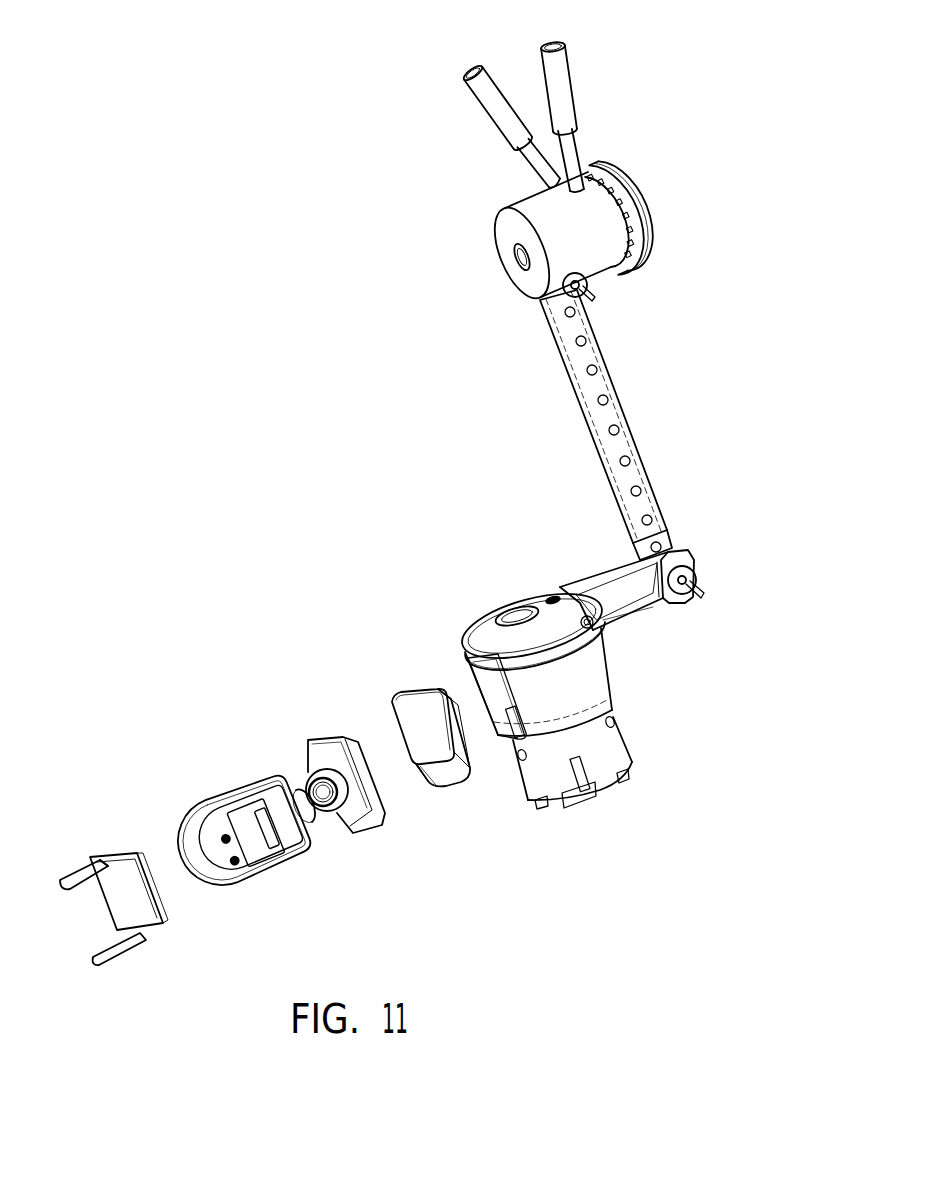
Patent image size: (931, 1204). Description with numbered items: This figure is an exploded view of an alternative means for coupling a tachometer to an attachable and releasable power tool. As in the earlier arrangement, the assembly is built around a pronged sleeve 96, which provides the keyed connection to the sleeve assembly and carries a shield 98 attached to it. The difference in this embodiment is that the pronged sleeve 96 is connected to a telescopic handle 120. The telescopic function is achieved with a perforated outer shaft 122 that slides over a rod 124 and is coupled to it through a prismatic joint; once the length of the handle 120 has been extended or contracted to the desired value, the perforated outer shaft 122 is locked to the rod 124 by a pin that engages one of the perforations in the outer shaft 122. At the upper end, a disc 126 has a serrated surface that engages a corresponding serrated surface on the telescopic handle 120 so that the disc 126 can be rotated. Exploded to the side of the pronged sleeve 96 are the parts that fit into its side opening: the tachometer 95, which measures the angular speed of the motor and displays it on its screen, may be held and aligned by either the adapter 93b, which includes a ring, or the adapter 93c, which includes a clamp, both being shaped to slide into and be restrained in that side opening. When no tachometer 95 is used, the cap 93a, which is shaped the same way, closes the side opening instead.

The telescopic handle 120 is at (708, 388).
The disc 126 is at (623, 197).
The perforated outer shaft 122 is at (600, 347).
The rod 124 is at (660, 547).
The pronged sleeve 96 is at (492, 620).
The shield 98 is at (613, 752).
The cap 93a is at (410, 703).
The adapter 93b is at (327, 750).
The adapter 93c is at (74, 875).
The tachometer 95 is at (237, 800).